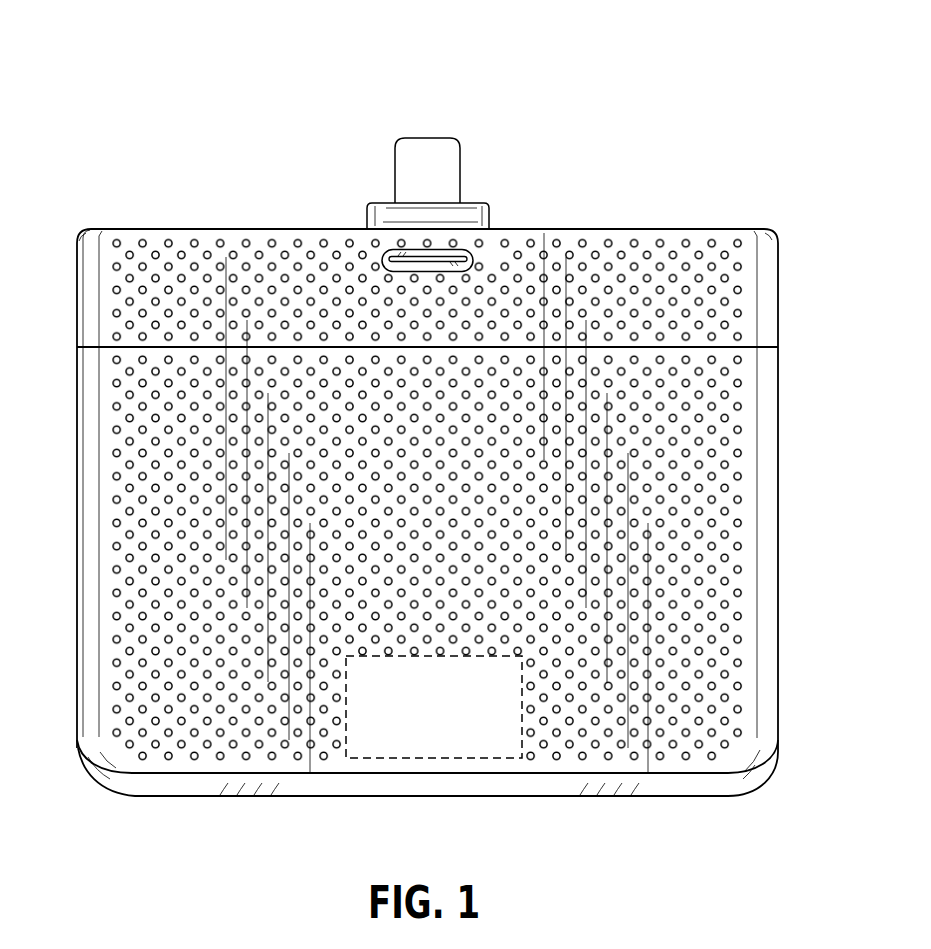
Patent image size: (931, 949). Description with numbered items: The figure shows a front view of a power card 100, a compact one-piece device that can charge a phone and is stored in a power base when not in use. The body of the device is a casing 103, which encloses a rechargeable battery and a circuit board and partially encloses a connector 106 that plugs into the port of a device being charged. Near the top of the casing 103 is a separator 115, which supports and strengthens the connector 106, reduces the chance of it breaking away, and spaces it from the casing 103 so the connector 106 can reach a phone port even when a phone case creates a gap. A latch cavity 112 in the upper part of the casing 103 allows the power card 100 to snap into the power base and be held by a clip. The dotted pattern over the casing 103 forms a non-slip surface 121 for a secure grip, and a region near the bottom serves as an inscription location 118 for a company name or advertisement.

The power card 100 is at (462, 451).
The casing 103 is at (462, 527).
The connector 106 is at (428, 138).
The latch cavity 112 is at (482, 259).
The separator 115 is at (472, 197).
The inscription location 118 is at (493, 729).
The non-slip surface 121 is at (697, 710).